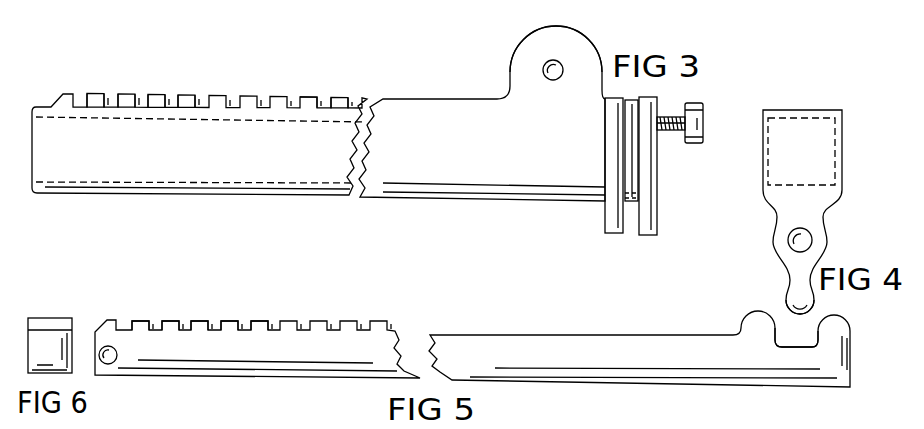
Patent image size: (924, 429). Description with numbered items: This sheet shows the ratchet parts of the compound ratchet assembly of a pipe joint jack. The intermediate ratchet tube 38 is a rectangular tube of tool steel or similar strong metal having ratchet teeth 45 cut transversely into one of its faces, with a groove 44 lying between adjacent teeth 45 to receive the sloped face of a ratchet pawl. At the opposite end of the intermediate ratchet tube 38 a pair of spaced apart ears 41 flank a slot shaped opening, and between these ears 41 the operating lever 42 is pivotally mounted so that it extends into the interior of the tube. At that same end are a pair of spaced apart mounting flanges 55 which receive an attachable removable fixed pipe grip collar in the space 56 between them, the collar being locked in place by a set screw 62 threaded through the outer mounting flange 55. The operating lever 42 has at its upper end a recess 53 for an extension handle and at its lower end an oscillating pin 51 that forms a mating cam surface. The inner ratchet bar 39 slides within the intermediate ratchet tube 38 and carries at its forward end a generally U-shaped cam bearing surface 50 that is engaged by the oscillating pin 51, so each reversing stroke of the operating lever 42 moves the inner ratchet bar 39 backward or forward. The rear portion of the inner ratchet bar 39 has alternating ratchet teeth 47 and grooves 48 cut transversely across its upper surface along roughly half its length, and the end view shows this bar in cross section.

In FIG. 3, the intermediate ratchet tube 38 is at (433, 97).
In FIG. 5, the inner ratchet bar 39 is at (500, 335).
In FIG. 6, the inner ratchet bar 39 is at (54, 315).
In FIG. 3, the spaced apart ears 41 is at (519, 44).
In FIG. 4, the operating lever 42 is at (843, 157).
In FIG. 3, the groove 44 is at (349, 94).
In FIG. 3, the ratchet teeth 45 is at (193, 92).
In FIG. 5, the ratchet teeth 47 is at (195, 316).
In FIG. 5, the grooves 48 is at (272, 322).
In FIG. 5, the cam bearing surface 50 is at (798, 349).
In FIG. 4, the oscillating pin 51 is at (787, 305).
In FIG. 4, the recess 53 is at (795, 135).
In FIG. 3, the mounting flanges 55 is at (607, 238).
In FIG. 3, the space 56 is at (632, 233).
In FIG. 3, the set screw 62 is at (706, 122).